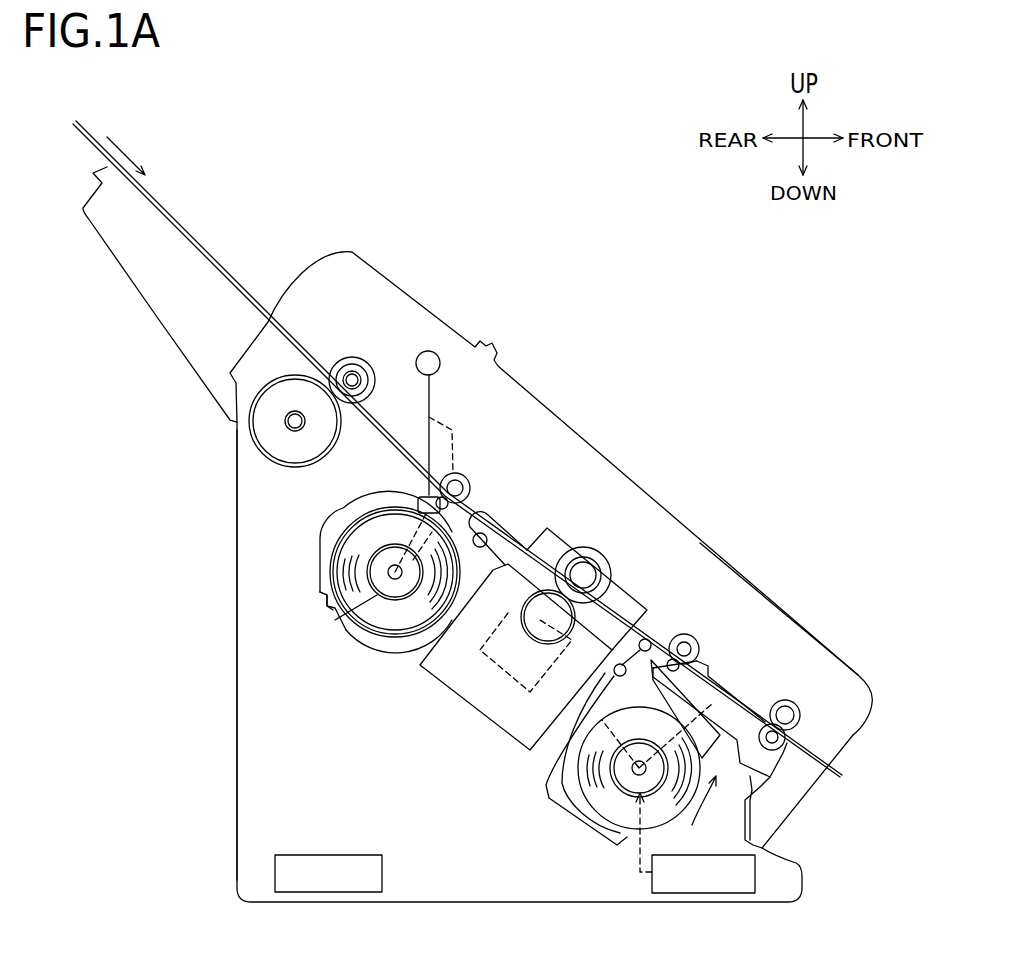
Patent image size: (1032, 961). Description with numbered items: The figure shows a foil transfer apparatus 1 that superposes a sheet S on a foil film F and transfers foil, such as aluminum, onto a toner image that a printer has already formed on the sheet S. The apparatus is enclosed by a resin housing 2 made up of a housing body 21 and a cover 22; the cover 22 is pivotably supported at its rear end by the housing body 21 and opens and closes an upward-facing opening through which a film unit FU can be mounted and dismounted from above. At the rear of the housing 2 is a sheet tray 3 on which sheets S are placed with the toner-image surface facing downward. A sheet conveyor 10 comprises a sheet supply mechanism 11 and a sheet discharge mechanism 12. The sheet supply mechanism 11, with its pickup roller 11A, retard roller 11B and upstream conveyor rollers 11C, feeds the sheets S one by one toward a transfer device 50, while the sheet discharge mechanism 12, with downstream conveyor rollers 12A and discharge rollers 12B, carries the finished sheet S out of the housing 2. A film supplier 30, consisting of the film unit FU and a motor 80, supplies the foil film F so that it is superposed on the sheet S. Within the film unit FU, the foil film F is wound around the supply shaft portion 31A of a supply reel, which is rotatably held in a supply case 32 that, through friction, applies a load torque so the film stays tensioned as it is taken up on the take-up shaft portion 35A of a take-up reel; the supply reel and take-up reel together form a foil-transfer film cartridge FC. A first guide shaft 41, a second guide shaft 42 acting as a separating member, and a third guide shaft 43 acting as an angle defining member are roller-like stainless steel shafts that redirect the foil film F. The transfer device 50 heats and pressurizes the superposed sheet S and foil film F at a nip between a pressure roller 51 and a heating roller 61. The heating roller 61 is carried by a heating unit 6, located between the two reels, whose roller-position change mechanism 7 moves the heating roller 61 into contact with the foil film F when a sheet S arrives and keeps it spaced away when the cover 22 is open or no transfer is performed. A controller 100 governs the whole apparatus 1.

The foil transfer apparatus 1 is at (676, 205).
The housing 2 is at (440, 304).
The sheet tray 3 is at (162, 325).
The heating unit 6 is at (535, 755).
The roller-position change mechanism 7 is at (478, 708).
The sheet conveyor 10 is at (715, 320).
The sheet supply mechanism 11 is at (396, 395).
The pickup roller 11A is at (253, 443).
The retard roller 11B is at (360, 358).
The upstream conveyor rollers 11C is at (470, 461).
The sheet discharge mechanism 12 is at (739, 660).
The downstream conveyor rollers 12A is at (687, 622).
The discharge rollers 12B is at (801, 680).
The housing body 21 is at (237, 695).
The cover 22 is at (785, 608).
The film supplier 30 is at (299, 566).
The supply shaft portion 31A is at (373, 595).
The supply case 32 is at (323, 595).
The take-up shaft portion 35A is at (624, 793).
The first guide shaft 41 is at (486, 534).
The second guide shaft 42 is at (648, 638).
The third guide shaft 43 is at (612, 671).
The transfer device 50 is at (665, 405).
The pressure roller 51 is at (596, 550).
The heating roller 61 is at (545, 545).
The motor 80 is at (715, 853).
The controller 100 is at (340, 853).
The sheet S is at (177, 230).
The foil film F is at (528, 617).
The film unit FU is at (322, 531).
The foil-transfer film cartridge FC is at (399, 650).